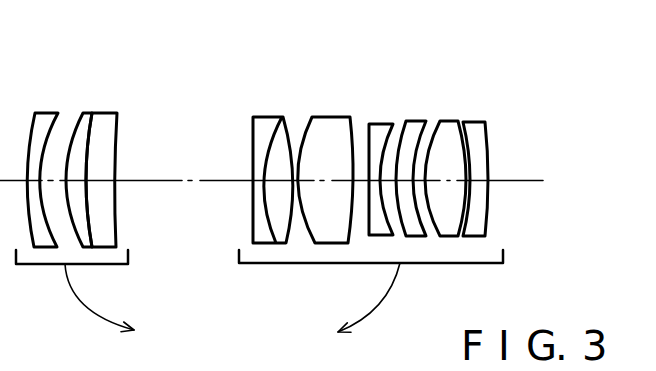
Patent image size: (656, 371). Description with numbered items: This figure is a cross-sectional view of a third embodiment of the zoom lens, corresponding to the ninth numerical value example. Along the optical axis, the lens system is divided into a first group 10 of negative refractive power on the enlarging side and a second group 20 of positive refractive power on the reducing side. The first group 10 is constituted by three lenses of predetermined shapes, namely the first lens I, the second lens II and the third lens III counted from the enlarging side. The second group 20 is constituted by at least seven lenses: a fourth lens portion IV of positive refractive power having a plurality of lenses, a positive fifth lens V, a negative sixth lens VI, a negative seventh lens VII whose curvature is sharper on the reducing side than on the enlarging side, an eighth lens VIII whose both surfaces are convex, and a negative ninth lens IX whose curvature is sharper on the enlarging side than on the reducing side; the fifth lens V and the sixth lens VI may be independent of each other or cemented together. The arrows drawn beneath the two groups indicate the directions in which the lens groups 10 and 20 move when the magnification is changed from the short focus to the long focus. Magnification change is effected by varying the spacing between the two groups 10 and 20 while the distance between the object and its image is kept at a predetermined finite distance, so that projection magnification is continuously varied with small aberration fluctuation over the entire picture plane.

The first group 10 is at (21, 58).
The second group 20 is at (233, 60).
The first lens I is at (47, 112).
The second lens II is at (84, 112).
The third lens III is at (105, 112).
The fourth lens portion IV is at (282, 117).
The fifth lens V is at (336, 117).
The sixth lens VI is at (377, 120).
The seventh lens VII is at (415, 120).
The eighth lens VIII is at (449, 120).
The ninth lens IX is at (478, 121).